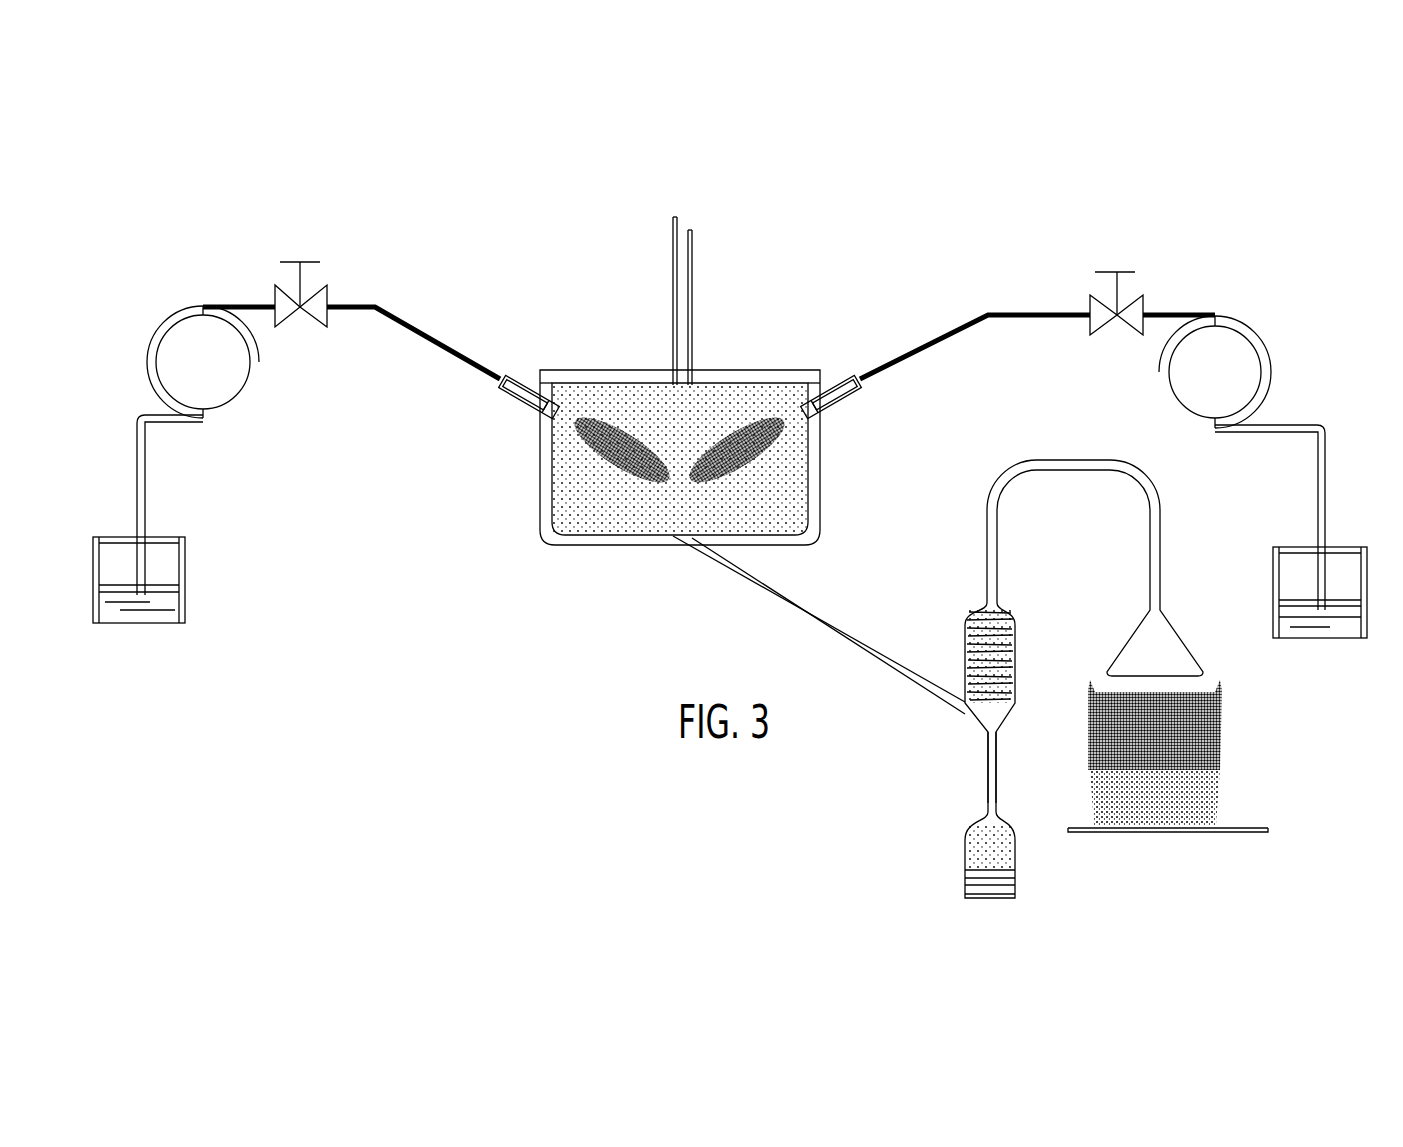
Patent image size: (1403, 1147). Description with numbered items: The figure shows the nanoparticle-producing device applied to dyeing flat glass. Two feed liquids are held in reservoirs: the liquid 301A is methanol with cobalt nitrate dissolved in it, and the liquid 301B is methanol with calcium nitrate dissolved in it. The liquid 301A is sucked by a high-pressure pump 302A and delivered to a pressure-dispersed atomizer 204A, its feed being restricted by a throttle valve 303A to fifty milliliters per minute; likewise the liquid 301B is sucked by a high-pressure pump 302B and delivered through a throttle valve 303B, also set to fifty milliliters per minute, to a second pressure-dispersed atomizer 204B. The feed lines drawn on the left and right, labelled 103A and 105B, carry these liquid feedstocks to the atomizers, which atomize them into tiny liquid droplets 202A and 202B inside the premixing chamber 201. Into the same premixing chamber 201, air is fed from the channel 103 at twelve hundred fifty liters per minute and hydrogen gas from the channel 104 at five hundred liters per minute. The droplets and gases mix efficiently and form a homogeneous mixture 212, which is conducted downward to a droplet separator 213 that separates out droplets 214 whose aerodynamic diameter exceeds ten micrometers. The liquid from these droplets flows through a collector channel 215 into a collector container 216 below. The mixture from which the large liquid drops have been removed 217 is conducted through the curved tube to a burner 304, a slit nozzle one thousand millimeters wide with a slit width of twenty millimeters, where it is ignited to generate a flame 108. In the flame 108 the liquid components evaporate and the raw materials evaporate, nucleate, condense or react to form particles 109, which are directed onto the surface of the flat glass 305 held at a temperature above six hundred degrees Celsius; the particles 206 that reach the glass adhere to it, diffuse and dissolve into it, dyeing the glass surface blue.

The channel 103 is at (675, 217).
The channel 104 is at (690, 232).
The premixing chamber 201 is at (573, 380).
The liquid droplets 202A is at (622, 423).
The liquid droplets 202B is at (728, 423).
The pressure-dispersed atomizer 204A is at (507, 398).
The pressure-dispersed atomizer 204B is at (853, 398).
The first supply line 103A is at (432, 345).
The liquid feedstock 105B is at (928, 350).
The homogeneous mixture 212 is at (803, 517).
The droplet separator 213 is at (977, 598).
The droplets 214 is at (1013, 673).
The collector channel 215 is at (985, 785).
The collector container 216 is at (965, 835).
The mixture with large liquid drops removed 217 is at (1138, 485).
The liquid 301A is at (185, 607).
The liquid 301B is at (1290, 630).
The high-pressure pump 302A is at (160, 350).
The high-pressure pump 302B is at (1253, 363).
The throttle valve 303A is at (278, 300).
The throttle valve 303B is at (1137, 307).
The burner 304 is at (1185, 660).
The flame 108 is at (1217, 713).
The particles 109 is at (1210, 812).
The substrate 206 is at (1260, 828).
The flat glass 305 is at (1215, 832).